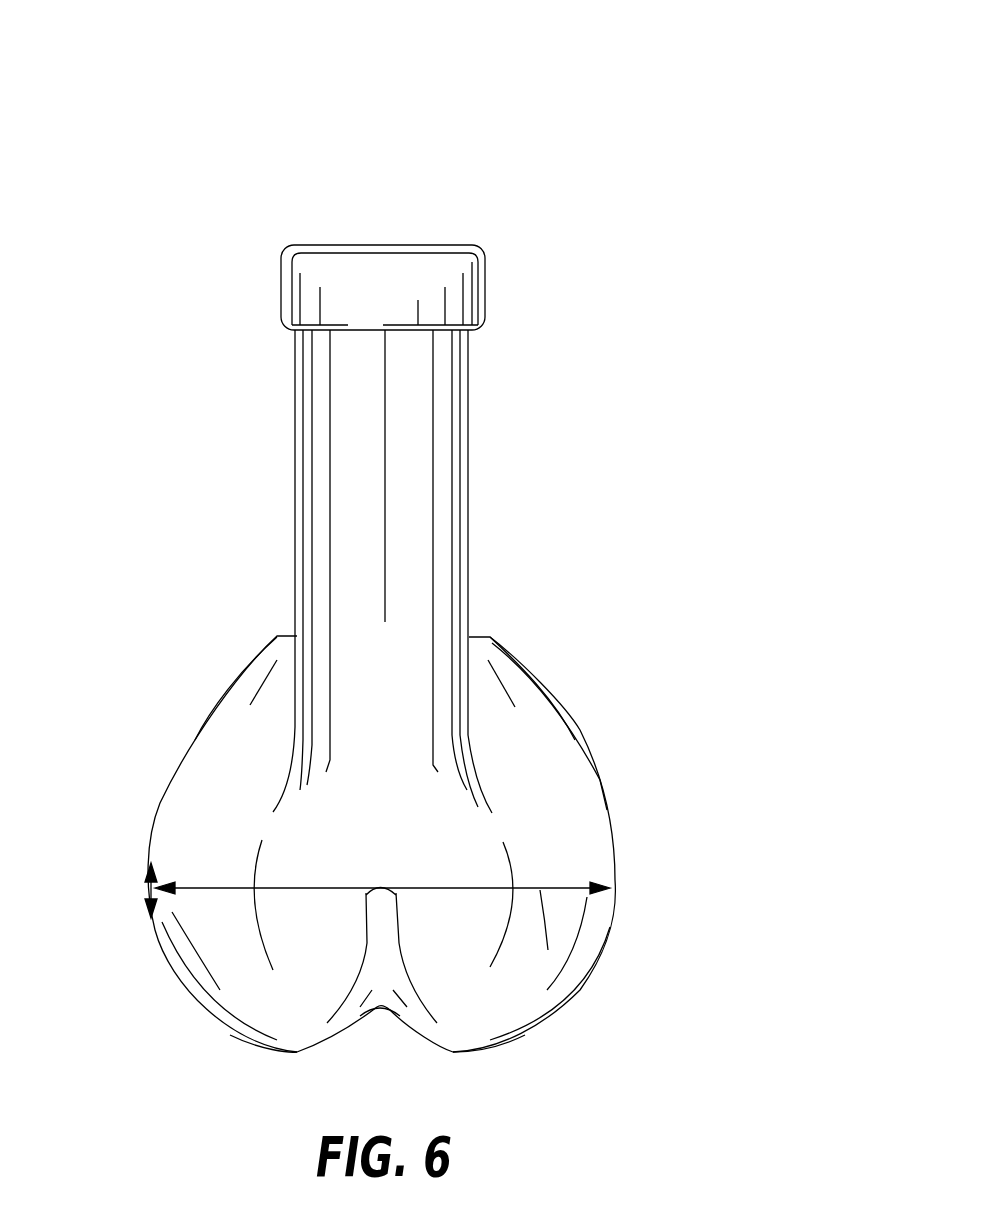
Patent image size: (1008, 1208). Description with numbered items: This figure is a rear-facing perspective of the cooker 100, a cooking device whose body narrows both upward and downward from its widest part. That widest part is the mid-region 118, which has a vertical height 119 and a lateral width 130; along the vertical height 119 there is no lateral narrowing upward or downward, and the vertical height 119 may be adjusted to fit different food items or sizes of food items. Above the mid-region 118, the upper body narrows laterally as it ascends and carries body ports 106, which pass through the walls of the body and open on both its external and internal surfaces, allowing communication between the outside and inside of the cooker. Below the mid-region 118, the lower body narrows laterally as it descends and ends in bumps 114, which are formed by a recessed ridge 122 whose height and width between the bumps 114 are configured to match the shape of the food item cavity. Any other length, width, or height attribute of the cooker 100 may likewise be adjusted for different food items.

The cooker 100 is at (415, 558).
The body ports 106 is at (212, 740).
The bumps 114 is at (297, 1053).
The mid-region 118 is at (613, 888).
The vertical height 119 is at (150, 888).
The recessed ridge 122 is at (383, 1040).
The lateral width 130 is at (540, 890).